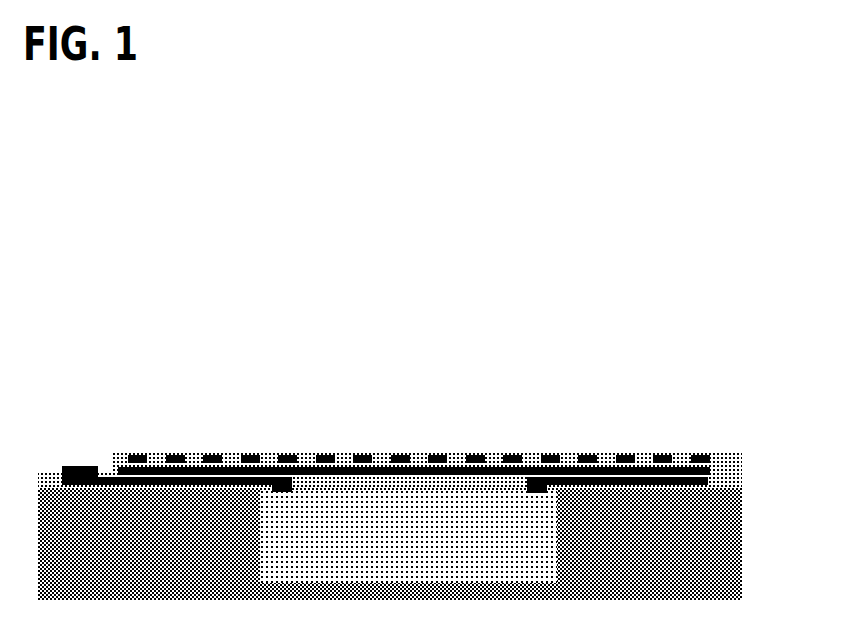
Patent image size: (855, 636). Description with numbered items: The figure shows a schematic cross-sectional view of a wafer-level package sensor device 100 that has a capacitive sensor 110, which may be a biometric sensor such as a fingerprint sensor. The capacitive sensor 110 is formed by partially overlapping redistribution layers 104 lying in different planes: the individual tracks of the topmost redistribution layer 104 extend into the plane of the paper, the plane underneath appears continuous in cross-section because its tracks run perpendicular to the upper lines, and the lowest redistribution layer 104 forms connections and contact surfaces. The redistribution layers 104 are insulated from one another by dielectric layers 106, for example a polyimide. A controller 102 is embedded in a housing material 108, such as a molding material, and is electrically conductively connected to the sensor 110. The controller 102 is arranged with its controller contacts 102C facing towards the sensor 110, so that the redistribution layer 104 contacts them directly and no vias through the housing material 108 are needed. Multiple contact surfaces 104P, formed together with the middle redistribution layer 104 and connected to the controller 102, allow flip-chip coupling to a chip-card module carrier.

The wafer-level package sensor device 100 is at (417, 401).
The controller 102 is at (435, 550).
The controller contacts 102C is at (283, 492).
The redistribution layer 104 is at (248, 455).
The contact surface 104P is at (77, 467).
The dielectric layer 106 is at (733, 457).
The housing material 108 is at (168, 553).
The capacitive sensor 110 is at (746, 452).